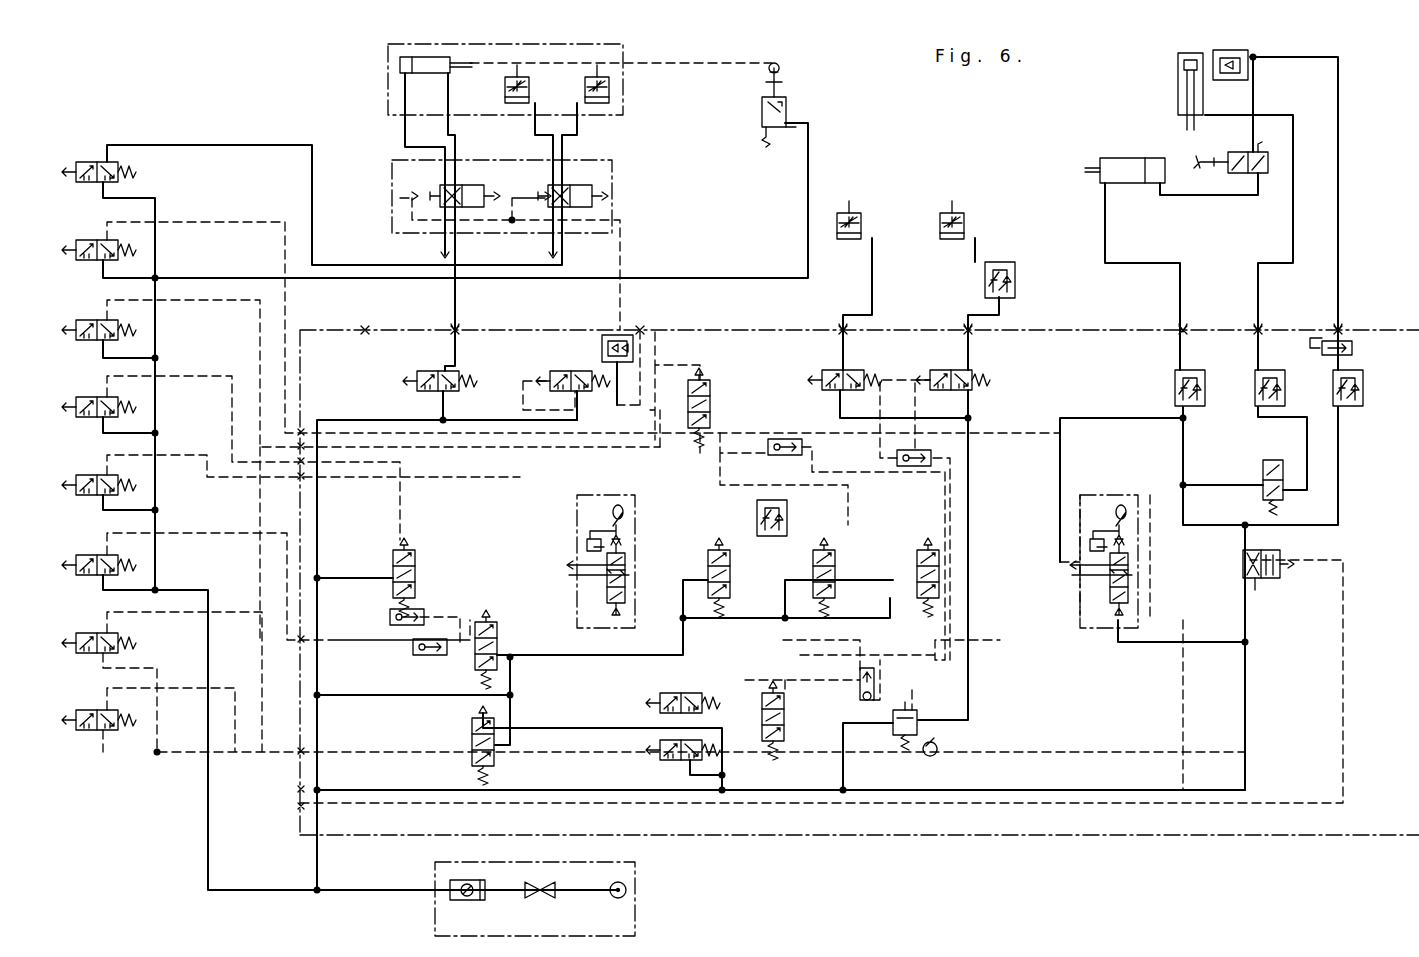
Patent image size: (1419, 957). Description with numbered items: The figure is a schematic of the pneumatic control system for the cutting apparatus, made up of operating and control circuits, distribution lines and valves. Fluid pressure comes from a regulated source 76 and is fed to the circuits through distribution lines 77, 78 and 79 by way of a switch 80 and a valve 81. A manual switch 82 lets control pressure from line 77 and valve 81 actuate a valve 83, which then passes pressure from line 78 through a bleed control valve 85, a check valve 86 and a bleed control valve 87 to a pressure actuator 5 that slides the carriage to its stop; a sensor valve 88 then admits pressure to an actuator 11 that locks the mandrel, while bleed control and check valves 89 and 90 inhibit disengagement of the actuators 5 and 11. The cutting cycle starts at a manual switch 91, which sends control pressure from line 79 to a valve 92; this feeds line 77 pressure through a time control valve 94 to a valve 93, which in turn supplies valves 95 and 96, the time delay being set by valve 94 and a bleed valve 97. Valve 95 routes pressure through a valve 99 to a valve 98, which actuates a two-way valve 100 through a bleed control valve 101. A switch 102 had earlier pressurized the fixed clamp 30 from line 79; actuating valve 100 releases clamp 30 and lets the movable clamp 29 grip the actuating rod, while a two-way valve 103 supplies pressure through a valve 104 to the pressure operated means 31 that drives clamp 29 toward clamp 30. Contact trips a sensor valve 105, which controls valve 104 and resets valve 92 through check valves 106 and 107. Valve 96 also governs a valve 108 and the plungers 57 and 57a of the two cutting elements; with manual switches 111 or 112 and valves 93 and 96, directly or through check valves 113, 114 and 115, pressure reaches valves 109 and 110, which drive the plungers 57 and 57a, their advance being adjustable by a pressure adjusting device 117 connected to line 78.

The pressure actuator 5 is at (1178, 55).
The actuator 11 is at (1125, 158).
The movable clamp 29 is at (505, 90).
The fixed clamp 30 is at (609, 90).
The pressure operated means 31 is at (428, 57).
The plunger 57 is at (861, 220).
The plunger 57a is at (964, 220).
The regulated source 76 is at (635, 918).
The distribution line 77 is at (317, 728).
The distribution line 78 is at (1018, 790).
The distribution line 79 is at (208, 840).
The switch 80 is at (90, 730).
The valve 81 is at (472, 722).
The manual switch 82 is at (90, 653).
The valve 83 is at (1270, 578).
The bleed control valve 85 is at (1363, 400).
The check valve 86 is at (1345, 341).
The bleed control valve 87 is at (1240, 50).
The sensor valve 88 is at (1240, 152).
The bleed control and check valve 89 is at (1205, 375).
The bleed control and check valve 90 is at (1285, 375).
The manual switch 91 is at (90, 495).
The valve 92 is at (410, 560).
The valve 93 is at (708, 565).
The time control valve 94 is at (577, 520).
The valve 95 is at (813, 560).
The valve 96 is at (917, 560).
The bleed valve 97 is at (787, 505).
The valve 98 is at (560, 371).
The valve 99 is at (710, 385).
The two-way valve 100 is at (585, 185).
The bleed control valve 101 is at (630, 362).
The switch 102 is at (95, 162).
The two-way valve 103 is at (440, 188).
The valve 104 is at (450, 391).
The sensor valve 105 is at (786, 90).
The check valve 106 is at (424, 612).
The check valve 107 is at (420, 655).
The valve 108 is at (784, 735).
The valve 109 is at (822, 372).
The valve 110 is at (935, 370).
The manual switch 111 is at (660, 698).
The manual switch 112 is at (660, 745).
The check valve 113 is at (874, 690).
The check valve 114 is at (897, 455).
The check valve 115 is at (768, 443).
The pressure adjusting device 117 is at (893, 732).